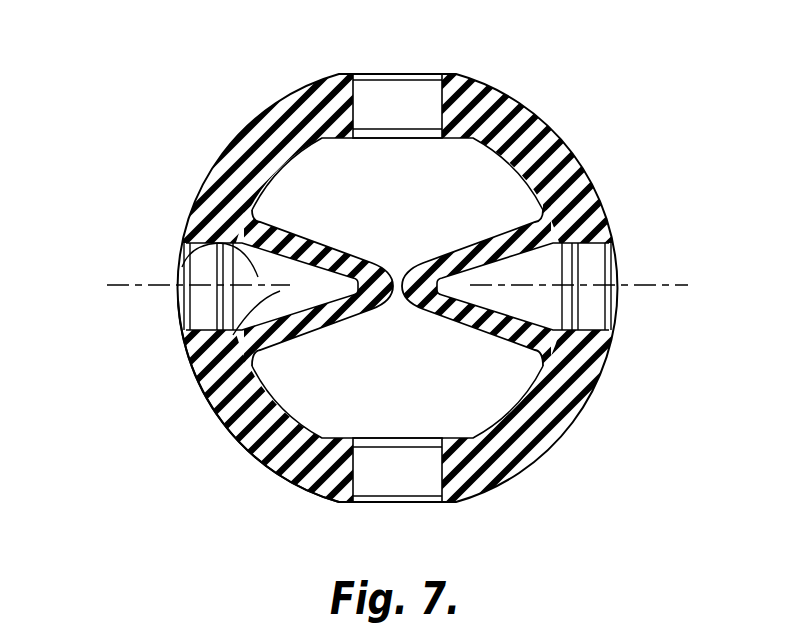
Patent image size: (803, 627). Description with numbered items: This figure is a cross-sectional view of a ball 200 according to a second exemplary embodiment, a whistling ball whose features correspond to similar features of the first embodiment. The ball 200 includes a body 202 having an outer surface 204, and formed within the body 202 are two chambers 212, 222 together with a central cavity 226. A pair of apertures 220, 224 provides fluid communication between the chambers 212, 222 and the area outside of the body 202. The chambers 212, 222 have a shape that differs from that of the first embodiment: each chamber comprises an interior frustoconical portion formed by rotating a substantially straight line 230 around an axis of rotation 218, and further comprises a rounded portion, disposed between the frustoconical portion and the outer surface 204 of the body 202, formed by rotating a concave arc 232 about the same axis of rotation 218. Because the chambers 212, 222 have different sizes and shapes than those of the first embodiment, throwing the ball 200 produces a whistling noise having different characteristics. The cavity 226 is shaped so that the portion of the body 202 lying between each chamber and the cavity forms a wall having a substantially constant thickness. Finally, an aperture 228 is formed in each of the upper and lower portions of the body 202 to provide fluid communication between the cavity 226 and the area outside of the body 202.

The ball 200 is at (150, 128).
The body 202 is at (592, 401).
The outer surface 204 is at (592, 173).
The chamber 212 is at (195, 389).
The axis of rotation 218 is at (128, 287).
The aperture 220 is at (178, 318).
The chamber 222 is at (527, 300).
The aperture 224 is at (620, 263).
The central cavity 226 is at (472, 178).
The aperture 228 is at (377, 74).
The substantially straight line 230 is at (192, 273).
The concave arc 232 is at (180, 262).